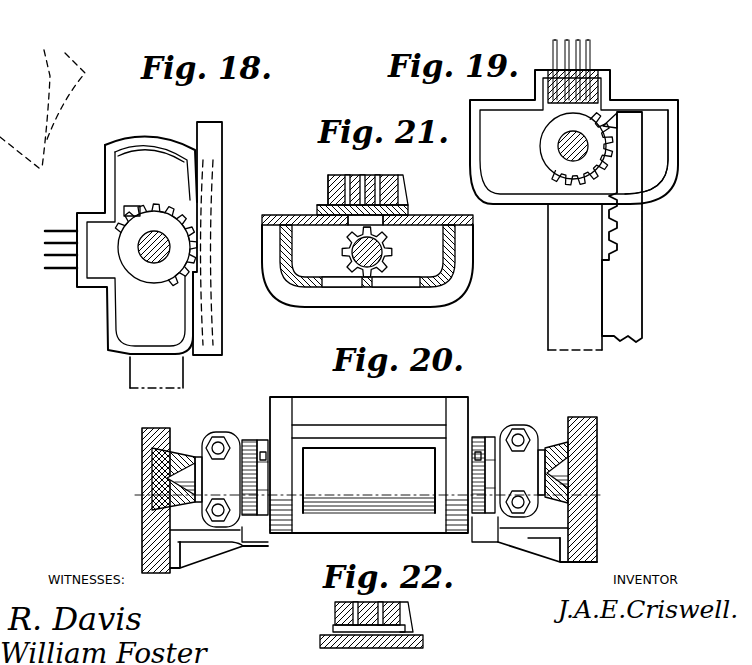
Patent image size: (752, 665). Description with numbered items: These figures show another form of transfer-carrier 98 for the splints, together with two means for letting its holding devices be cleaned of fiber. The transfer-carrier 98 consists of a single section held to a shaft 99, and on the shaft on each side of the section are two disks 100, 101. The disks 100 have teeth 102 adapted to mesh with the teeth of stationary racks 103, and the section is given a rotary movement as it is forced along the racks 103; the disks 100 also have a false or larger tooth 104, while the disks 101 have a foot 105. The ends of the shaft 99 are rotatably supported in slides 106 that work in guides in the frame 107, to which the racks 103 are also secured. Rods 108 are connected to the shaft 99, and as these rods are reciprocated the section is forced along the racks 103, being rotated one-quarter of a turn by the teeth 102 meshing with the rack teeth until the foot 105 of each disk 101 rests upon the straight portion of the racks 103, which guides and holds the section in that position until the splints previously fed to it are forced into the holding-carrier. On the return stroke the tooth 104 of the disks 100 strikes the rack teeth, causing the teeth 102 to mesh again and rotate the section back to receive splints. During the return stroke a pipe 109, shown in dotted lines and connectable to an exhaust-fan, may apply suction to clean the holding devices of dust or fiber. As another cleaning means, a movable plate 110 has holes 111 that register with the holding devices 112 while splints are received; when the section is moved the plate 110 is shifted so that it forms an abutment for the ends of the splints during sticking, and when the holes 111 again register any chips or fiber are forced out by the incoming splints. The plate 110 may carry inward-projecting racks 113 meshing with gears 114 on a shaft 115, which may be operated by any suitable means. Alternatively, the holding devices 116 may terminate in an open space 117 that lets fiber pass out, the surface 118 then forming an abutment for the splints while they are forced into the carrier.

In FIG. 18, the transfer-carrier 98 is at (121, 248).
In FIG. 19, the transfer-carrier 98 is at (574, 122).
In FIG. 21, the transfer-carrier 98 is at (367, 261).
In FIG. 20, the transfer-carrier 98 is at (367, 469).
In FIG. 18, the shaft 99 is at (157, 263).
In FIG. 19, the shaft 99 is at (560, 151).
In FIG. 18, the disk 100 is at (130, 262).
In FIG. 19, the disk 100 is at (573, 146).
In FIG. 20, the disk 100 is at (242, 440).
In FIG. 20, the disk 101 is at (258, 440).
In FIG. 18, the teeth 102 is at (168, 212).
In FIG. 19, the teeth 102 is at (560, 180).
In FIG. 20, the teeth 102 is at (258, 528).
In FIG. 18, the stationary rack 103 is at (222, 344).
In FIG. 19, the stationary rack 103 is at (639, 277).
In FIG. 20, the stationary rack 103 is at (232, 537).
In FIG. 18, the false or larger tooth 104 is at (147, 204).
In FIG. 19, the false or larger tooth 104 is at (615, 155).
In FIG. 18, the foot 105 is at (118, 206).
In FIG. 19, the foot 105 is at (613, 113).
In FIG. 20, the foot 105 is at (473, 457).
In FIG. 20, the slide 106 is at (142, 485).
In FIG. 20, the frame 107 is at (142, 545).
In FIG. 18, the rod 108 is at (129, 386).
In FIG. 19, the rod 108 is at (558, 318).
In FIG. 20, the rod 108 is at (210, 457).
In FIG. 18, the pipe 109 is at (42, 97).
In FIG. 21, the movable plate 110 is at (320, 208).
In FIG. 21, the holes 111 is at (402, 212).
In FIG. 21, the holding devices 112 is at (380, 186).
In FIG. 21, the inward-projecting rack 113 is at (353, 229).
In FIG. 21, the gear 114 is at (384, 247).
In FIG. 21, the shaft 115 is at (364, 265).
In FIG. 22, the holding devices 116 is at (352, 605).
In FIG. 22, the open space 117 is at (414, 630).
In FIG. 22, the surface 118 is at (333, 629).